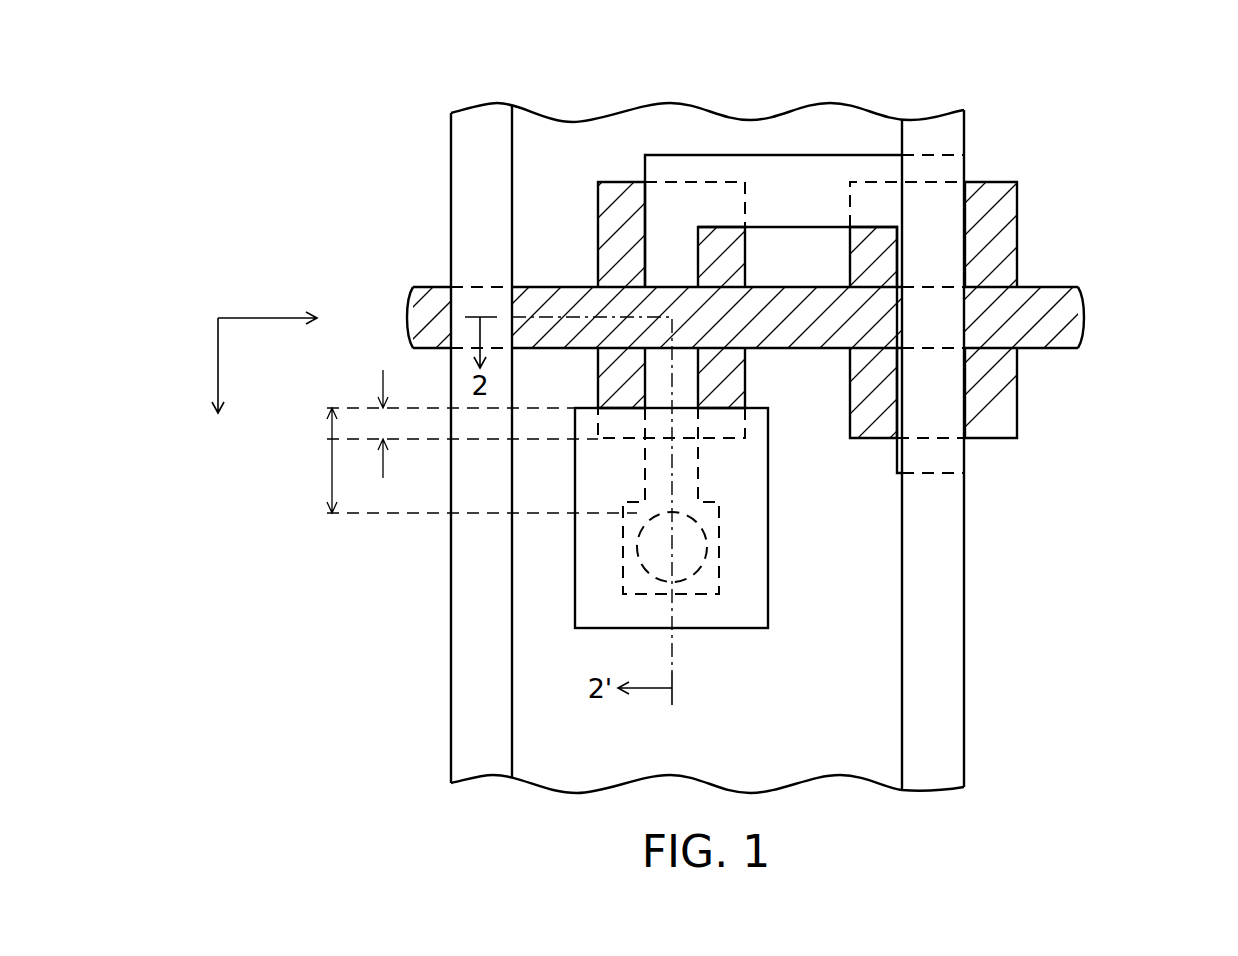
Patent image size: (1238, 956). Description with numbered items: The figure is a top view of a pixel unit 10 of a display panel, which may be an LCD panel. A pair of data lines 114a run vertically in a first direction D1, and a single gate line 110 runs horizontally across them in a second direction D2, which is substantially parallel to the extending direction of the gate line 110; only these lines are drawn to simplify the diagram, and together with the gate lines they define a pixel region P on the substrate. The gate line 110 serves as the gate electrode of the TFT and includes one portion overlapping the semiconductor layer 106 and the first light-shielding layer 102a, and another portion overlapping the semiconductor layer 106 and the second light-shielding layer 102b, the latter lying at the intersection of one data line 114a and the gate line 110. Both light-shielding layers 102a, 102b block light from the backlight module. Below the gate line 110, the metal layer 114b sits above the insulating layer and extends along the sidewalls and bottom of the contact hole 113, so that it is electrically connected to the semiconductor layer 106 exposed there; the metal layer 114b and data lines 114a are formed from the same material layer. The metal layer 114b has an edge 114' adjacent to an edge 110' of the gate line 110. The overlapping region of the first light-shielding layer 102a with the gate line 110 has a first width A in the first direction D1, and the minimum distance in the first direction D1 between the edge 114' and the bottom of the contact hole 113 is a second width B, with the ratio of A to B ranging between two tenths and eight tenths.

The pixel unit 10 is at (353, 89).
The first light-shielding layer 102a is at (615, 236).
The second light-shielding layer 102b is at (1000, 233).
The semiconductor layer 106 is at (787, 185).
The gate line 110 is at (791, 317).
The edge of the gate line 110' is at (934, 439).
The contact hole 113 is at (635, 548).
The data line 114a is at (473, 656).
The metal layer 114b is at (598, 602).
The edge of the metal layer 114' is at (797, 237).
The first width A is at (370, 424).
The second width B is at (322, 460).
The pixel region P is at (544, 741).
The first direction D1 is at (218, 368).
The second direction D2 is at (266, 316).